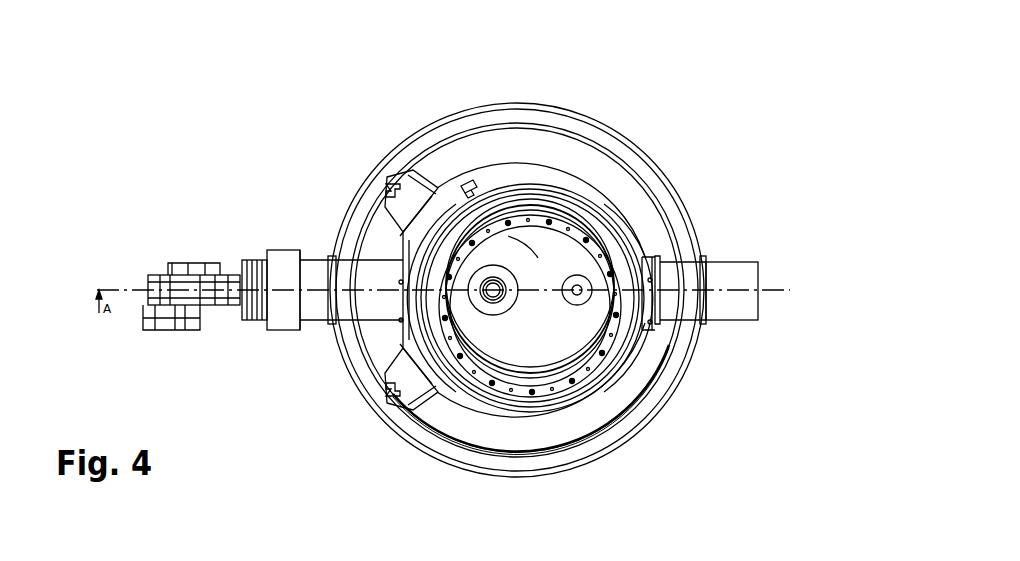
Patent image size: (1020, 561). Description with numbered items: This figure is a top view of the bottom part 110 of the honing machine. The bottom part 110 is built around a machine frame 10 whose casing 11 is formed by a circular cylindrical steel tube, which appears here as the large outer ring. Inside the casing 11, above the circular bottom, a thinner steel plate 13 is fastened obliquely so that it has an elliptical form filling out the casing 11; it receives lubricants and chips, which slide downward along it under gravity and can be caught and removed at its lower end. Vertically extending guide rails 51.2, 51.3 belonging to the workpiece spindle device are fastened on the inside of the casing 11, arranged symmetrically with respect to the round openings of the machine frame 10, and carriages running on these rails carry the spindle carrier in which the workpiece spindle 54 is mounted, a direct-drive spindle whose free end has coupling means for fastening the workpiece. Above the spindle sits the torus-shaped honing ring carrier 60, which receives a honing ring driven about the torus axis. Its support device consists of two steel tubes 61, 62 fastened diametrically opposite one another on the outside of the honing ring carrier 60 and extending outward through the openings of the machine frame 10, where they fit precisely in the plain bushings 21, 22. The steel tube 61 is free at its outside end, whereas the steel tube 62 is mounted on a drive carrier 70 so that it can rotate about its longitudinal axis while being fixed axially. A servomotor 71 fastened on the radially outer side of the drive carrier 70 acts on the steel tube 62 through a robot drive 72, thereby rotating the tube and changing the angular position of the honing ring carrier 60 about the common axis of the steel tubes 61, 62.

The bottom part 110 is at (652, 98).
The machine frame 10 is at (642, 432).
The casing 11 is at (672, 362).
The thinner steel plate 13 is at (503, 435).
The plain bushing 21 is at (700, 253).
The steel tube 61 is at (750, 278).
The plain bushing 22 is at (330, 257).
The steel tube 62 is at (368, 300).
The drive carrier 70 is at (283, 262).
The servomotor 71 is at (188, 280).
The robot drive 72 is at (248, 316).
The honing ring carrier 60 is at (500, 183).
The workpiece spindle 54 is at (494, 288).
The guide rail 51.2 is at (390, 185).
The guide rail 51.3 is at (393, 390).